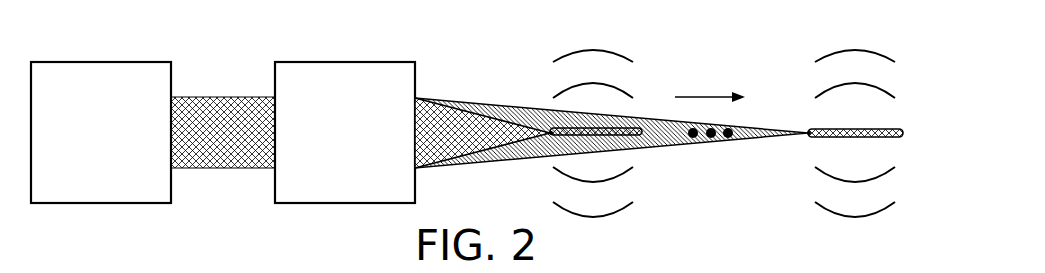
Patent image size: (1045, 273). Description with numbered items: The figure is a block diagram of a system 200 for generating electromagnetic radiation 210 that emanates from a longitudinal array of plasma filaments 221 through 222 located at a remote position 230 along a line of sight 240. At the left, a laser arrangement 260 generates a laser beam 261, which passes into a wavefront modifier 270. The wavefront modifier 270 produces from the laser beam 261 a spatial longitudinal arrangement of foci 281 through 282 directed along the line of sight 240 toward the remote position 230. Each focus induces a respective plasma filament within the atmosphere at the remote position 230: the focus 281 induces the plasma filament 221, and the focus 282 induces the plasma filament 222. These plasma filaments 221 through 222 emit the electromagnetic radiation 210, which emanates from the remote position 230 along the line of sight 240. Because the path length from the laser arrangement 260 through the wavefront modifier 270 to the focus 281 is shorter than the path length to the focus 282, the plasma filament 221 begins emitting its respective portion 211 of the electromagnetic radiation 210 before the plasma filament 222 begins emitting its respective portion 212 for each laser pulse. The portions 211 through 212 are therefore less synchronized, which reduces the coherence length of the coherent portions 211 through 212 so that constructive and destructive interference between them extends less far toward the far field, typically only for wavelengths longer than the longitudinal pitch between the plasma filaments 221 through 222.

The system 200 is at (63, 52).
The laser arrangement 260 is at (153, 62).
The laser beam 261 is at (232, 97).
The wavefront modifier 270 is at (290, 62).
The remote position 230 is at (492, 70).
The focus 281 is at (550, 130).
The plasma filament 221 is at (593, 128).
The electromagnetic radiation 210 is at (553, 61).
The portion of the electromagnetic radiation 211 is at (633, 61).
The portion of the electromagnetic radiation 212 is at (895, 61).
The line of sight 240 is at (711, 97).
The focus 282 is at (812, 128).
The plasma filament 222 is at (857, 128).